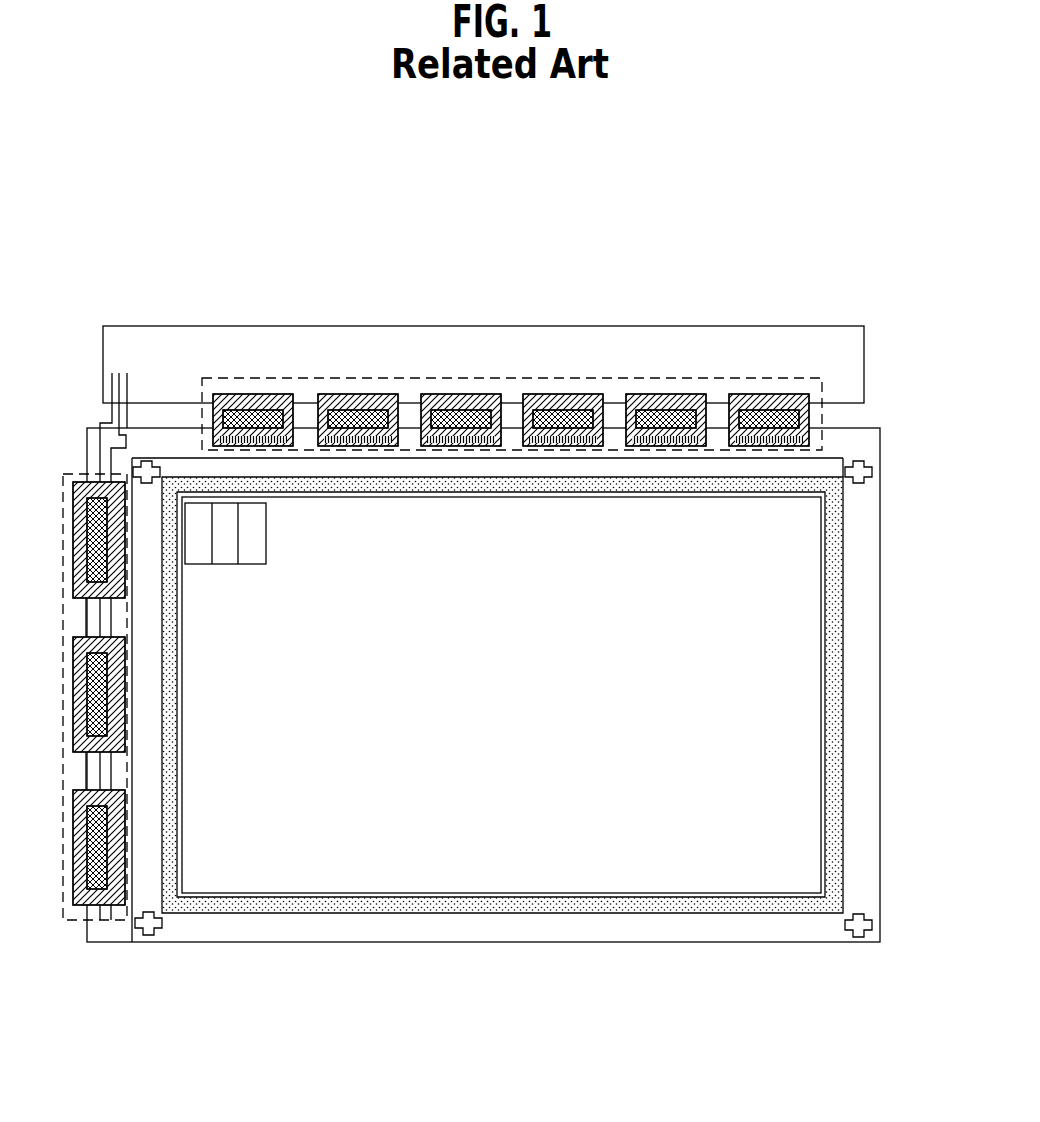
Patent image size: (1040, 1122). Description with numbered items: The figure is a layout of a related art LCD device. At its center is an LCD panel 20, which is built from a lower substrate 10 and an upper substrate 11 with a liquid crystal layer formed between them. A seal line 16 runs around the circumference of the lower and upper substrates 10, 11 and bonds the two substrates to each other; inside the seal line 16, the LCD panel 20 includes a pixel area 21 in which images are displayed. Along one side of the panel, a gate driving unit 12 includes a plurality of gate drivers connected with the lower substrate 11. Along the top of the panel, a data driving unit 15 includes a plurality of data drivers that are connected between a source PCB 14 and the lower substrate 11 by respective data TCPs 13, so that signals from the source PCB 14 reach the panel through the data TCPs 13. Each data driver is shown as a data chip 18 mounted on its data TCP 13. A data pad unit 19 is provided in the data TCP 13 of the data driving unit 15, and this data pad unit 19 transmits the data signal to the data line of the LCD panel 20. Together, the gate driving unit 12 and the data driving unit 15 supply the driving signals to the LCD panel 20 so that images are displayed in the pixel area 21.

The lower substrate 10 is at (863, 603).
The upper substrate 11 is at (867, 428).
The gate driving unit 12 is at (83, 473).
The data TCP 13 is at (667, 397).
The source PCB 14 is at (329, 347).
The data driving unit 15 is at (753, 378).
The seal line 16 is at (835, 663).
The data chip 18 is at (239, 396).
The data pad unit 19 is at (282, 444).
The LCD panel 20 is at (889, 779).
The pixel area 21 is at (822, 857).